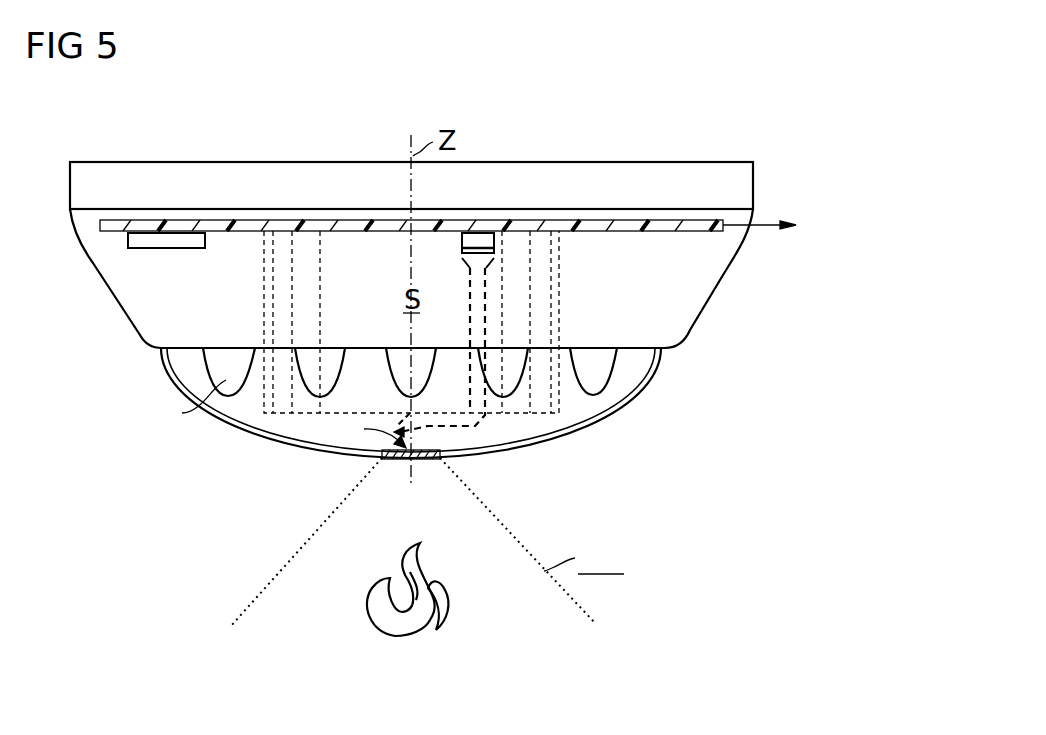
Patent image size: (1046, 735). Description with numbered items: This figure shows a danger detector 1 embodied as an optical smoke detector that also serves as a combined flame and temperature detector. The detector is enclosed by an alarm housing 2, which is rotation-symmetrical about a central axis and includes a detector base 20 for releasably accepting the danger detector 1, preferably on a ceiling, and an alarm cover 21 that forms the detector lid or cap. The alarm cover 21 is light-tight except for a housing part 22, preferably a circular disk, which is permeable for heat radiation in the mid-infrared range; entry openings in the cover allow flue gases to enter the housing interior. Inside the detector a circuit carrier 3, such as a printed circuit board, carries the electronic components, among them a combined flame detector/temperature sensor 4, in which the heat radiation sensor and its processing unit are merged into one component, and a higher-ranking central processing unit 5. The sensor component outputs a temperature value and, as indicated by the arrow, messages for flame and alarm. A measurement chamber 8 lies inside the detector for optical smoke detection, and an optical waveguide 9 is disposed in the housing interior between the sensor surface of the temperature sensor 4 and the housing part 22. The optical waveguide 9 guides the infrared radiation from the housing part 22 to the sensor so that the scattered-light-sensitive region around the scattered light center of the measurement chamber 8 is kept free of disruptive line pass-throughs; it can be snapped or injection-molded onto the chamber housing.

The danger detector 1 is at (775, 158).
The alarm housing 2 is at (662, 350).
The detector base 20 is at (712, 298).
The alarm cover 21 is at (623, 411).
The circuit carrier 3 is at (630, 227).
The combined flame detector/temperature sensor 4 is at (462, 235).
The higher-ranking central processing unit 5 is at (133, 245).
The measurement chamber 8 is at (264, 413).
The optical waveguide 9 is at (470, 318).
The housing part 22 is at (418, 463).